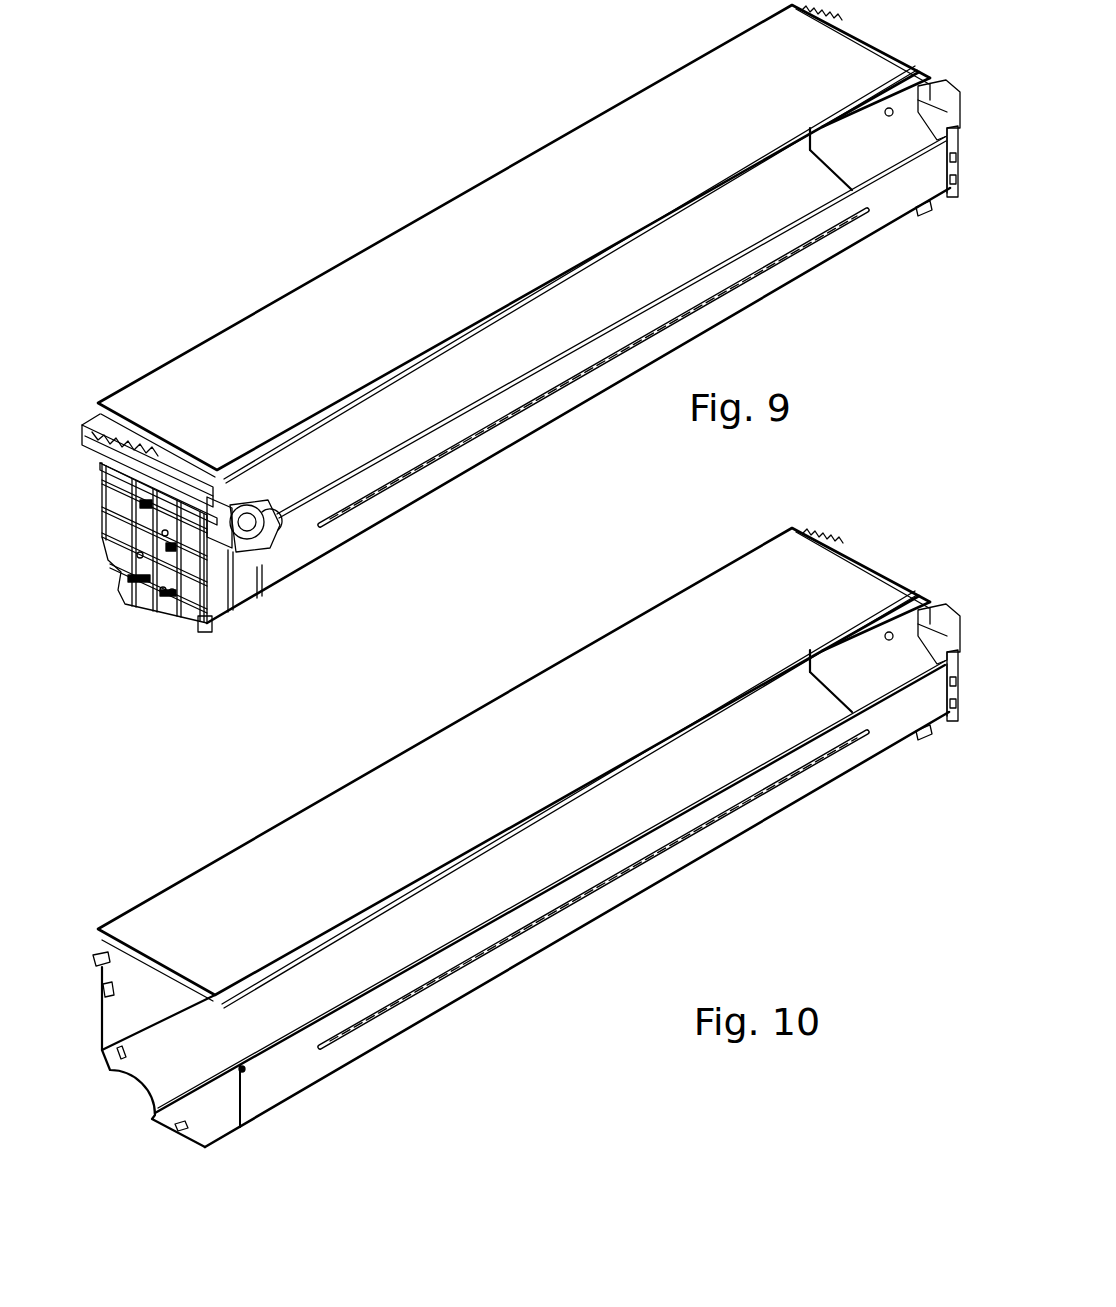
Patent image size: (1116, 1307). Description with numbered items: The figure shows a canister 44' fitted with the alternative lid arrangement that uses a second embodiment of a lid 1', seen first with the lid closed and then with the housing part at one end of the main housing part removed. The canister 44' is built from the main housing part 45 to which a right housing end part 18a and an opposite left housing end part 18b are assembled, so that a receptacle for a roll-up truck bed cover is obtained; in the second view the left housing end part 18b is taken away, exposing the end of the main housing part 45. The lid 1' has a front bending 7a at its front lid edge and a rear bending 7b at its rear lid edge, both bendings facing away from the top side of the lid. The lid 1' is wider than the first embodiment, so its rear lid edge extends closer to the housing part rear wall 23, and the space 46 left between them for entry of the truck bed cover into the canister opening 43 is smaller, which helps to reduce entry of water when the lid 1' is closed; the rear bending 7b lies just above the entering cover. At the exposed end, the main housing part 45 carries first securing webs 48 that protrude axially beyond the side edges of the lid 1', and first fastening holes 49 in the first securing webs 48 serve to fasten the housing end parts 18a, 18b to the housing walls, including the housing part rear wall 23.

In FIG. 9, the lid 1' is at (154, 453).
In FIG. 10, the lid 1' is at (205, 940).
In FIG. 9, the front bending 7a is at (322, 275).
In FIG. 10, the front bending 7a is at (375, 770).
In FIG. 9, the rear bending 7b is at (620, 242).
In FIG. 10, the rear bending 7b is at (645, 755).
In FIG. 9, the right housing end part 18a is at (923, 80).
In FIG. 10, the right housing end part 18a is at (925, 607).
In FIG. 9, the left housing end part 18b is at (178, 598).
In FIG. 9, the housing part rear wall 23 is at (540, 420).
In FIG. 10, the housing part rear wall 23 is at (705, 845).
In FIG. 9, the canister opening 43 is at (772, 185).
In FIG. 10, the canister opening 43 is at (770, 715).
In FIG. 9, the canister 44' is at (299, 573).
In FIG. 10, the canister 44' is at (424, 1126).
In FIG. 9, the main housing part 45 is at (400, 493).
In FIG. 10, the main housing part 45 is at (575, 915).
In FIG. 9, the space 46 is at (481, 391).
In FIG. 10, the space 46 is at (553, 861).
In FIG. 10, the first securing webs 48 is at (125, 1013).
In FIG. 10, the first fastening holes 49 is at (135, 1055).